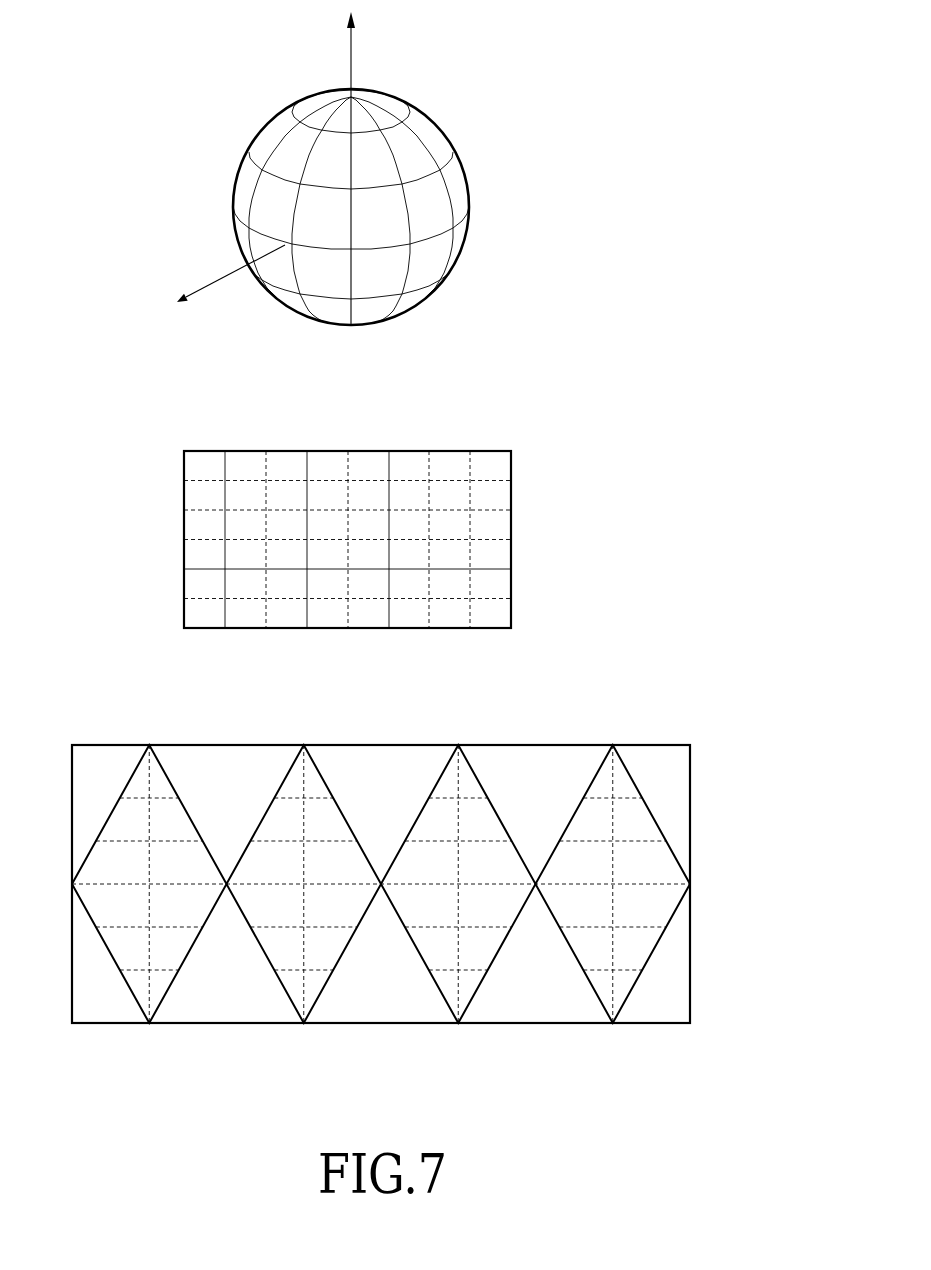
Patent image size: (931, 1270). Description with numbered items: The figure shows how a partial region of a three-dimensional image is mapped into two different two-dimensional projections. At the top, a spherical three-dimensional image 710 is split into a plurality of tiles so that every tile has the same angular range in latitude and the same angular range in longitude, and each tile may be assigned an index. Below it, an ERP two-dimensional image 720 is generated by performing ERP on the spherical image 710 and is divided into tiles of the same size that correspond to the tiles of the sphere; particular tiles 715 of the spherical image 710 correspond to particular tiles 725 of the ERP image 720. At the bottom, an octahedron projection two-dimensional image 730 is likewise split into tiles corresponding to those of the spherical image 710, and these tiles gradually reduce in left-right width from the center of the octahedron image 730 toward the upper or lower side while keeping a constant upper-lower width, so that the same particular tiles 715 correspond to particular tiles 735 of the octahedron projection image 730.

The spherical 3D image 710 is at (244, 112).
The particular tiles of the 3D image 715 is at (440, 210).
The ERP 2D image 720 is at (148, 467).
The particular tiles of the ERP 2D image 725 is at (503, 527).
The octahedron projection 2D image 730 is at (111, 715).
The particular tiles of the octahedron projection 2D image 735 is at (638, 818).